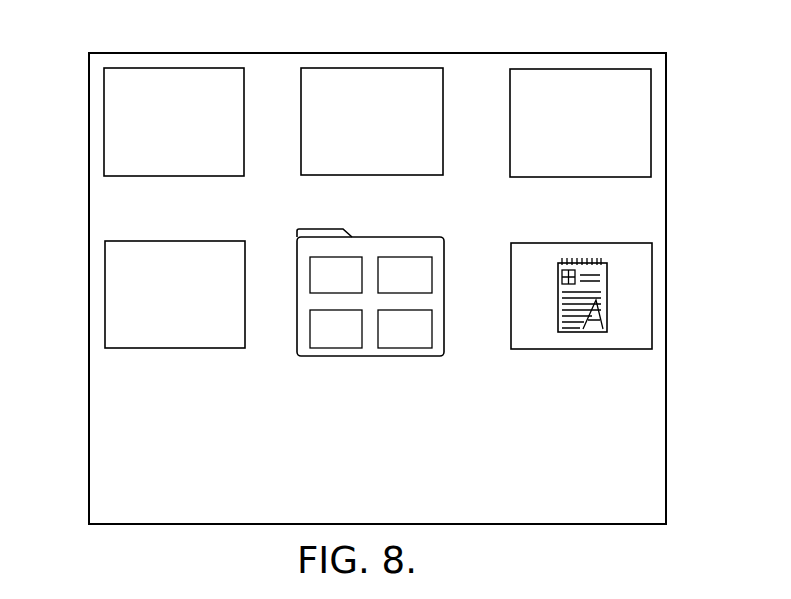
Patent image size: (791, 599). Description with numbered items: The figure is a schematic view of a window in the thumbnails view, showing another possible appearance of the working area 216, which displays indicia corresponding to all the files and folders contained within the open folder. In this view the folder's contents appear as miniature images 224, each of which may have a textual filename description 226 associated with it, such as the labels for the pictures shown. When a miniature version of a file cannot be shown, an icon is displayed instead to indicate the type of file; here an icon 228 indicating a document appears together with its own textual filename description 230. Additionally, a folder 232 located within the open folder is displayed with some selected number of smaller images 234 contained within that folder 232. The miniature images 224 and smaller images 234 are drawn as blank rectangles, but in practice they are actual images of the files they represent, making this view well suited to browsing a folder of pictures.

The working area 216 is at (666, 100).
The miniature images 224 is at (104, 107).
The textual filename description 226 is at (163, 197).
The icon 228 is at (615, 280).
The textual filename description 230 is at (562, 383).
The folder 232 is at (444, 288).
The smaller images 234 is at (350, 284).